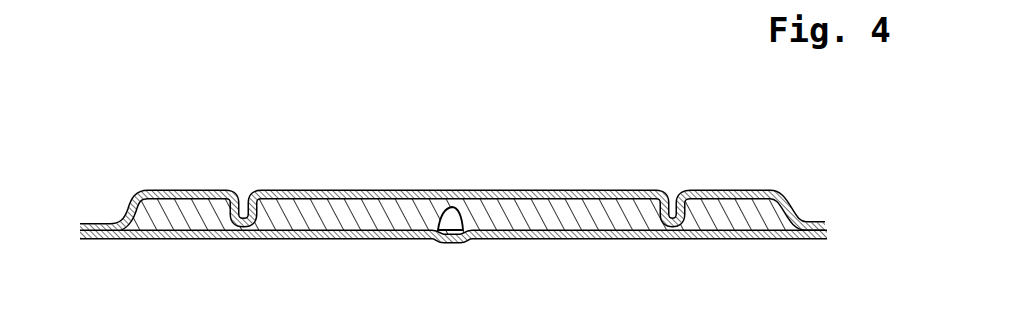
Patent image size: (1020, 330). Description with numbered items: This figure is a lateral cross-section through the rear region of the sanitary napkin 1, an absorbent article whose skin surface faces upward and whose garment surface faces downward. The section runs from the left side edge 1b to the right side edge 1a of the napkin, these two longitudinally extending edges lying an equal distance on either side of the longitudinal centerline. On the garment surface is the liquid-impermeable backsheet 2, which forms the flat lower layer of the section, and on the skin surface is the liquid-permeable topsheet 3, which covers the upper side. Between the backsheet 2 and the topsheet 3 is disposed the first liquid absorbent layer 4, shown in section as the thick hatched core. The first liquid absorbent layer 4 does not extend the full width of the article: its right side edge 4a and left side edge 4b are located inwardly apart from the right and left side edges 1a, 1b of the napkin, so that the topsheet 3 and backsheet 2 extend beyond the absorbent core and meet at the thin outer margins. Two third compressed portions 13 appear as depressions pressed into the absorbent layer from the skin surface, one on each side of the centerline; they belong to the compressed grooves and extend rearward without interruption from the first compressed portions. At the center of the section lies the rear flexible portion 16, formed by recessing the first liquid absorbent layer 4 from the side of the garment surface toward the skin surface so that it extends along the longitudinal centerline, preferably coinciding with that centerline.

The sanitary napkin 1 is at (608, 137).
The right side edge 1a is at (828, 233).
The left side edge 1b is at (76, 239).
The liquid-impermeable backsheet 2 is at (387, 237).
The liquid-permeable topsheet 3 is at (412, 189).
The first liquid absorbent layer 4 is at (330, 218).
The right side edge of first liquid absorbent layer 4a is at (778, 208).
The left side edge of first liquid absorbent layer 4b is at (122, 210).
The third compressed portion 13 is at (241, 218).
The rear flexible portion 16 is at (457, 208).